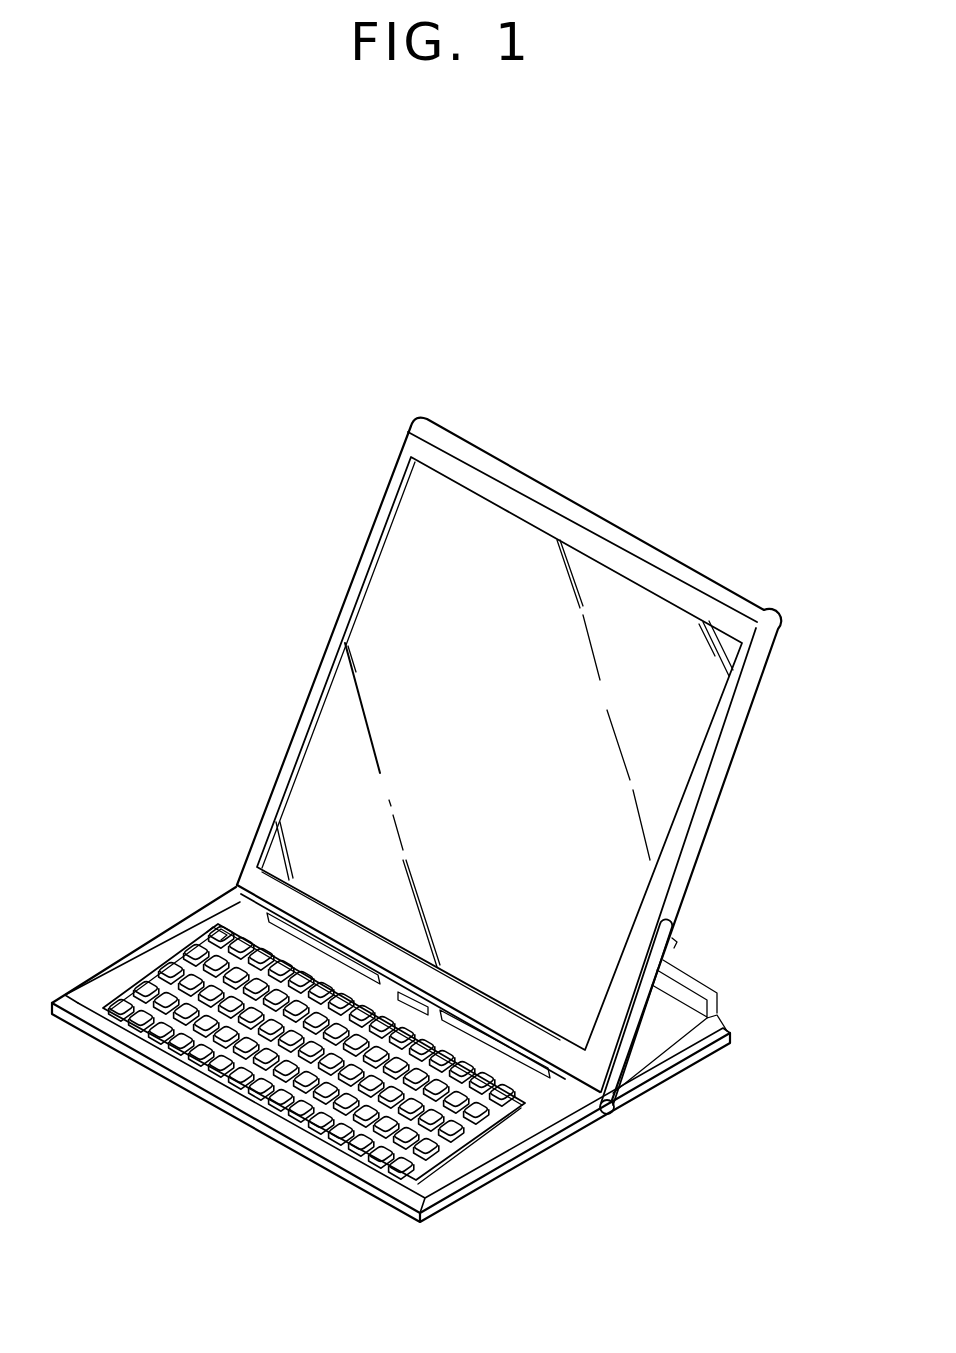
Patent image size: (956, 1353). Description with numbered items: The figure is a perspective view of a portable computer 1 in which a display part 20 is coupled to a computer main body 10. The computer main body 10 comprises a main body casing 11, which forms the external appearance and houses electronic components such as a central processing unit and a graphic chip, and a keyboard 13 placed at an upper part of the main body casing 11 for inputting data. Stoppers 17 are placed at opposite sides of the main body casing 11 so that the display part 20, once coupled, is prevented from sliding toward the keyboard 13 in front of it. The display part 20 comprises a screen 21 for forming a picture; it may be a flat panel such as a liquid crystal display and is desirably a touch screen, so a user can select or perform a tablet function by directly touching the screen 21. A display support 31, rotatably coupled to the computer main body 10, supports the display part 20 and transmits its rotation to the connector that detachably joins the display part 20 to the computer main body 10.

The portable computer 1 is at (189, 606).
The computer main body 10 is at (531, 1228).
The main body casing 11 is at (493, 1172).
The keyboard 13 is at (427, 1157).
The stopper 17 is at (550, 1074).
The display part 20 is at (742, 697).
The screen 21 is at (683, 745).
The display support 31 is at (675, 940).